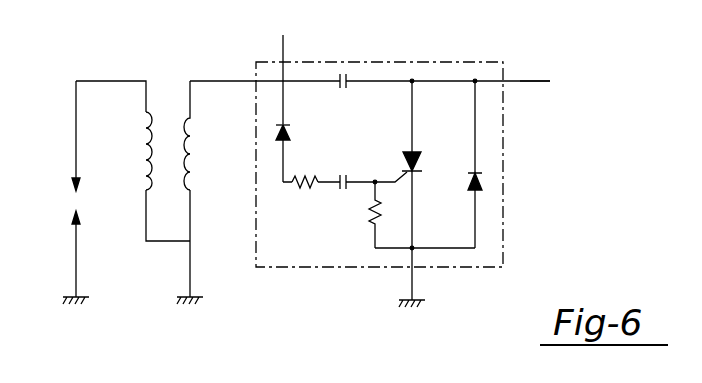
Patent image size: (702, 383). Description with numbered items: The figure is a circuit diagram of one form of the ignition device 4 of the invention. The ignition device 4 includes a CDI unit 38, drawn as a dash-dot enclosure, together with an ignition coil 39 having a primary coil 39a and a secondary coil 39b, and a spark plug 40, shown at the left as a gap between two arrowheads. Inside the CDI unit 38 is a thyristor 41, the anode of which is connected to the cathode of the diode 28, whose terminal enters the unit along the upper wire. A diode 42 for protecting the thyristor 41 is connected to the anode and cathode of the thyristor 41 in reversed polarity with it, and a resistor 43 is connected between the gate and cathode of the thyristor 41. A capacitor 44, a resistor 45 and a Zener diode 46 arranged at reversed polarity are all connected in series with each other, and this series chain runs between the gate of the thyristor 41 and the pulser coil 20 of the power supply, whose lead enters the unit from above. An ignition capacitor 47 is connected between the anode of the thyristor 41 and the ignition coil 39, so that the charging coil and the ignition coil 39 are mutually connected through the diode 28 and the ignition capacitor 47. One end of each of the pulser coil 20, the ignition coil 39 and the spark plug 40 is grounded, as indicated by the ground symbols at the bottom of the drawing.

The ignition device 4 is at (314, 300).
The pulser coil 20 is at (294, 67).
The diode 28 is at (567, 90).
The CDI unit 38 is at (455, 61).
The ignition coil 39 is at (181, 163).
The primary coil 39a is at (191, 191).
The secondary coil 39b is at (147, 191).
The spark plug 40 is at (77, 200).
The thyristor 41 is at (414, 153).
The diode 42 is at (485, 177).
The resistor 43 is at (373, 208).
The capacitor 44 is at (343, 175).
The resistor 45 is at (305, 186).
The Zener diode 46 is at (278, 132).
The ignition capacitor 47 is at (343, 73).